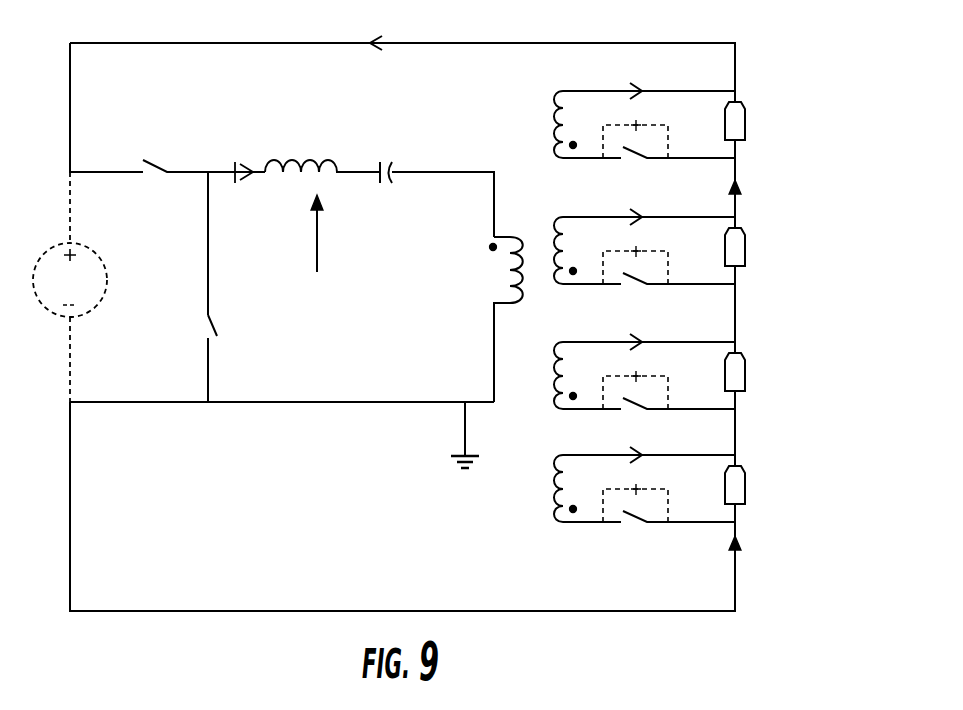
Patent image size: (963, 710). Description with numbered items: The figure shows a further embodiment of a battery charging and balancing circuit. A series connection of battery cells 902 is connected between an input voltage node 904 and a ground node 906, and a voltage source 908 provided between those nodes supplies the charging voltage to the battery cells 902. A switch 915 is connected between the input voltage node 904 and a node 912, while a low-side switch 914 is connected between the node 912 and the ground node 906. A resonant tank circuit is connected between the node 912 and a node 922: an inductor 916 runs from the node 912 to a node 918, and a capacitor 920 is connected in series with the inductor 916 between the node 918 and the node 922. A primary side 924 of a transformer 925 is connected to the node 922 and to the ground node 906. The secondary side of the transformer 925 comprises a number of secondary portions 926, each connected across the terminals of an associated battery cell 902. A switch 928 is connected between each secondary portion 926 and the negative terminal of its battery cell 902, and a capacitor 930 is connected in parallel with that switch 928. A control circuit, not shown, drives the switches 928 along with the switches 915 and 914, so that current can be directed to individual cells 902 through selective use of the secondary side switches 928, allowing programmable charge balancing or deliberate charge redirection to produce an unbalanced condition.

The battery cell 902 is at (745, 124).
The input voltage node 904 is at (68, 171).
The ground node 906 is at (68, 401).
The voltage source 908 is at (40, 262).
The node 912 is at (207, 172).
The low-side switch 914 is at (217, 325).
The switch 915 is at (152, 178).
The inductor 916 is at (328, 162).
The node 918 is at (363, 170).
The capacitor 920 is at (386, 178).
The node 922 is at (427, 170).
The primary side 924 is at (477, 283).
The transformer 925 is at (526, 236).
The secondary portion 926 is at (582, 91).
The switch 928 is at (610, 184).
The capacitor 930 is at (637, 121).